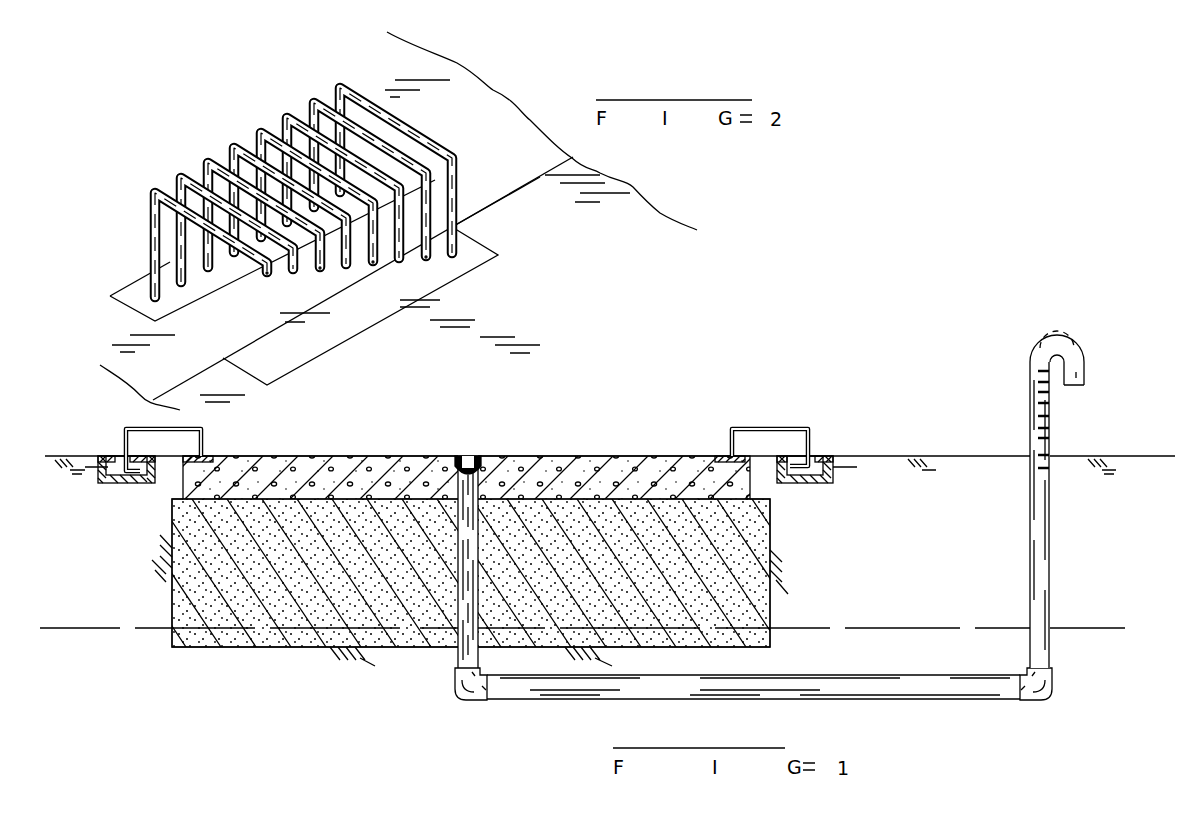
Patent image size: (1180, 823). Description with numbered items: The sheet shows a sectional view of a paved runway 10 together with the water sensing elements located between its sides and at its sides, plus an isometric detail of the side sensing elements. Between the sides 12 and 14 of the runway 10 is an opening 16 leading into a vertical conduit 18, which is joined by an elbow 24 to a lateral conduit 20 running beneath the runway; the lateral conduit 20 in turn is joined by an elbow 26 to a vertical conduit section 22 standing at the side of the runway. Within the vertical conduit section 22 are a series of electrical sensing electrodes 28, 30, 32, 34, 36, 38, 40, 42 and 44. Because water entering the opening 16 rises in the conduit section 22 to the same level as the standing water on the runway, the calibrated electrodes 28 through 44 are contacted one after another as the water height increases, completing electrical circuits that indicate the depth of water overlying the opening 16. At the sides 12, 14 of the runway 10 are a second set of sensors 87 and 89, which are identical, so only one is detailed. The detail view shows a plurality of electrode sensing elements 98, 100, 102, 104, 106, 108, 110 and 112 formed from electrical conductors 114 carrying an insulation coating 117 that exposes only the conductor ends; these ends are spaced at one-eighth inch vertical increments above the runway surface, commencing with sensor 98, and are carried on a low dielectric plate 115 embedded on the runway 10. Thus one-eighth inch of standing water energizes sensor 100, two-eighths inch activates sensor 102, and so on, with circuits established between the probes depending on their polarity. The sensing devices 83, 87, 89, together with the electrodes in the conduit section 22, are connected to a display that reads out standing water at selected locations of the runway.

In FIG. 2, the paved runway 10 is at (600, 243).
In FIG. 1, the paved runway 10 is at (592, 456).
In FIG. 1, the side of runway 12 is at (750, 481).
In FIG. 2, the side of runway 14 is at (188, 372).
In FIG. 1, the side of runway 14 is at (183, 486).
In FIG. 1, the opening 16 is at (476, 456).
In FIG. 1, the vertical conduit 18 is at (476, 541).
In FIG. 1, the lateral conduit 20 is at (735, 690).
In FIG. 1, the vertical conduit section 22 is at (1049, 568).
In FIG. 1, the elbow 24 is at (458, 690).
In FIG. 1, the elbow 26 is at (1050, 690).
In FIG. 1, the electrode 28 is at (1050, 468).
In FIG. 1, the electrode 30 is at (1050, 455).
In FIG. 1, the electrode 32 is at (1048, 438).
In FIG. 1, the electrode 34 is at (1048, 428).
In FIG. 1, the electrode 36 is at (1048, 416).
In FIG. 1, the electrode 38 is at (1040, 403).
In FIG. 1, the electrode 40 is at (1040, 391).
In FIG. 1, the electrode 42 is at (1040, 381).
In FIG. 1, the electrode 44 is at (1040, 369).
In FIG. 1, the sensing device 83 is at (1090, 364).
In FIG. 2, the sensor 87 is at (332, 235).
In FIG. 1, the sensor 87 is at (206, 432).
In FIG. 1, the sensor 89 is at (737, 426).
In FIG. 2, the electrode sensing element 98 is at (452, 200).
In FIG. 2, the electrode sensing element 100 is at (430, 257).
In FIG. 2, the electrode sensing element 102 is at (403, 258).
In FIG. 2, the electrode sensing element 104 is at (370, 260).
In FIG. 2, the electrode sensing element 106 is at (343, 262).
In FIG. 2, the electrode sensing element 108 is at (316, 270).
In FIG. 2, the electrode sensing element 110 is at (291, 271).
In FIG. 2, the electrode sensing element 112 is at (262, 265).
In FIG. 2, the electrical conductor 114 is at (267, 275).
In FIG. 2, the low dielectric plate 115 is at (477, 253).
In FIG. 2, the insulation coating 117 is at (452, 227).